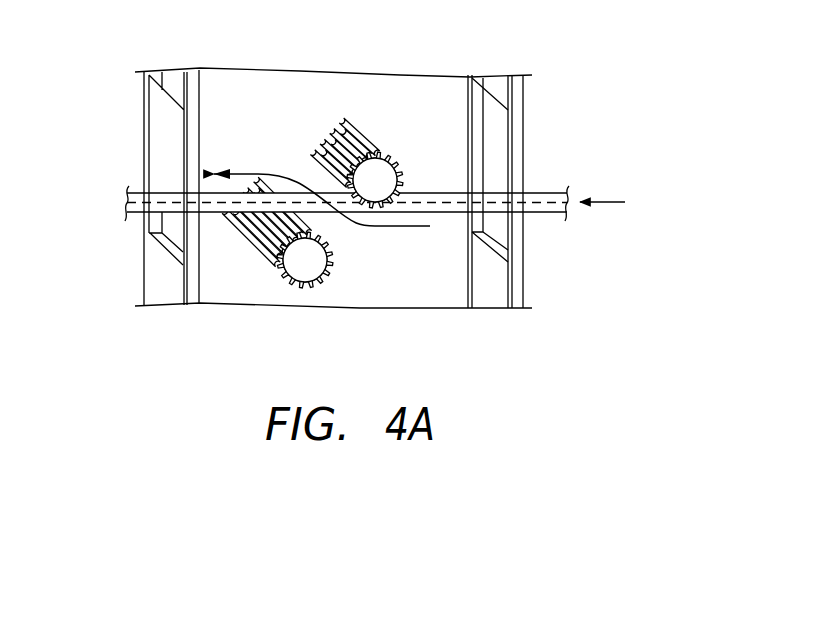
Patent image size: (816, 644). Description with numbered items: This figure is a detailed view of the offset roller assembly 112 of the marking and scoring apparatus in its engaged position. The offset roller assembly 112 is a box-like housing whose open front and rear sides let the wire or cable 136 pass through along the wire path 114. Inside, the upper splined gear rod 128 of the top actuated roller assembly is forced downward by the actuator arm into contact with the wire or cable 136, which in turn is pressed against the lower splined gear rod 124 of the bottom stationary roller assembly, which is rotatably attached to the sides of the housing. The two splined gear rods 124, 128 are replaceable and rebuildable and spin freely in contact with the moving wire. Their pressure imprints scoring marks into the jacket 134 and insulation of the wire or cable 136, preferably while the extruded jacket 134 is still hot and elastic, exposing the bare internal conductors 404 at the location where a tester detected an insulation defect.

The offset roller assembly 112 is at (589, 57).
The wire path 114 is at (494, 159).
The lower splined gear rod 124 is at (250, 261).
The upper splined gear rod 128 is at (301, 149).
The jacket 134 is at (491, 206).
The wire or cable 136 is at (626, 203).
The bare internal conductors 404 is at (437, 216).